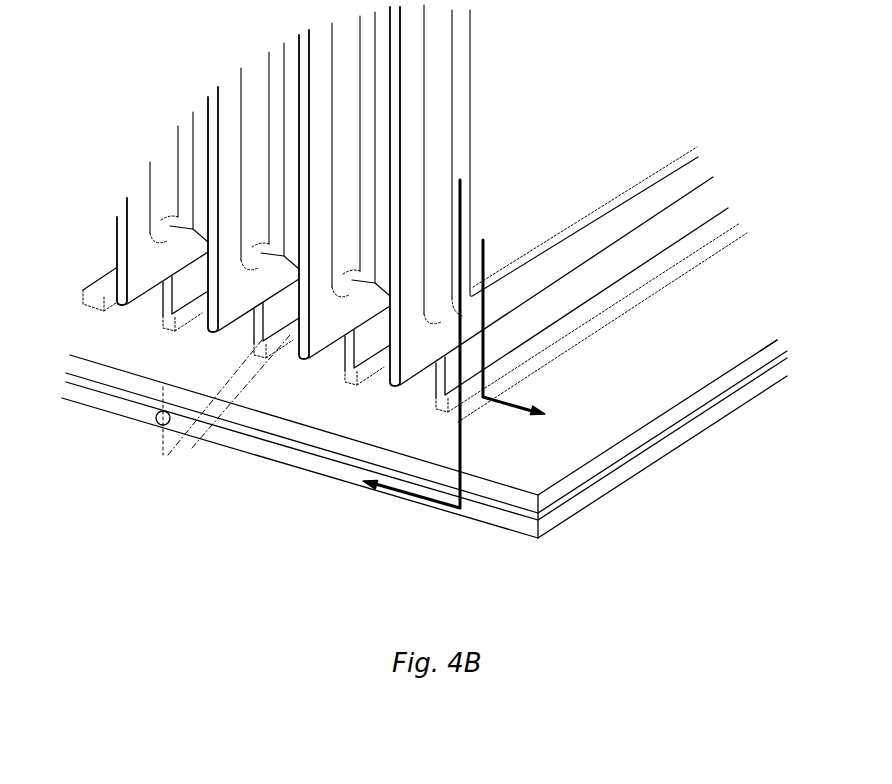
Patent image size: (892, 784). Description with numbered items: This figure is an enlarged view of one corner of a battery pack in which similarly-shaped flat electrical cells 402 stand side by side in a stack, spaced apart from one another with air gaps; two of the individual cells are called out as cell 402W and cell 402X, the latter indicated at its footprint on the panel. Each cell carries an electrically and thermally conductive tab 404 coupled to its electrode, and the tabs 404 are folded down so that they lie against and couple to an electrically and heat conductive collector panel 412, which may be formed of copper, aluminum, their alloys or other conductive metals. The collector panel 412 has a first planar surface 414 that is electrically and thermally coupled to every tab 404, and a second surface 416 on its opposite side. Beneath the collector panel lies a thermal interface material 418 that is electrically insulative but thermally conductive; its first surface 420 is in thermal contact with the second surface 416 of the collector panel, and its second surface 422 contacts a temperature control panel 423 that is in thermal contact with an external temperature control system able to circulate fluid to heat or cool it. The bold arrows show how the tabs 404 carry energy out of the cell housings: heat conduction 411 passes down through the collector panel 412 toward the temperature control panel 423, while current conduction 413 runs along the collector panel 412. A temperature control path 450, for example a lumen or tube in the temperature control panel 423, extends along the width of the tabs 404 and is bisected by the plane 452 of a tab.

The electrical cells 402 is at (371, 195).
The electrical cell 402W is at (116, 253).
The electrical cell 402X is at (140, 302).
The electrically and thermally conductive tab 404 is at (533, 315).
The heat conduction 411 is at (420, 500).
The collector panel 412 is at (443, 457).
The current conduction 413 is at (530, 405).
The first planar surface 414 is at (533, 468).
The second surface 416 is at (555, 514).
The thermal interface material 418 is at (627, 466).
The first surface 420 is at (623, 488).
The second surface 422 is at (778, 346).
The temperature control panel 423 is at (503, 523).
The temperature control path 450 is at (157, 424).
The plane of a tab 452 is at (163, 455).